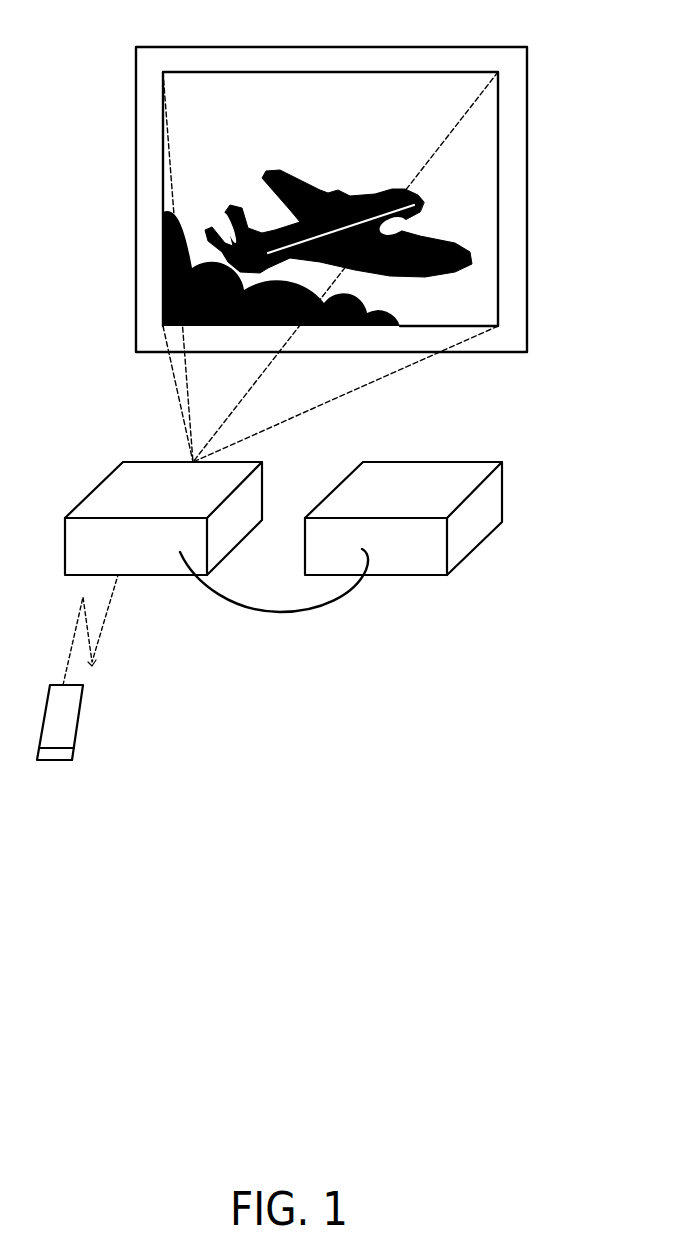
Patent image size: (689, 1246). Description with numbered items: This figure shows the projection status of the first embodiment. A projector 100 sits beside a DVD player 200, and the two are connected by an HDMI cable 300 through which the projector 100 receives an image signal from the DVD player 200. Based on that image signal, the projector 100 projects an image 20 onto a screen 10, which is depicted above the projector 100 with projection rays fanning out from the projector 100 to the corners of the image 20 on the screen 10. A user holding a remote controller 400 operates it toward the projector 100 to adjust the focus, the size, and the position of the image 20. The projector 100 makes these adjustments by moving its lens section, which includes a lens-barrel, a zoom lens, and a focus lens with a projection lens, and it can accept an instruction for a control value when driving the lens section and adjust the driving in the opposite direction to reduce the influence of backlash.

The screen 10 is at (480, 47).
The image 20 is at (412, 72).
The projector 100 is at (268, 505).
The DVD player 200 is at (495, 507).
The HDMI cable 300 is at (337, 597).
The remote controller 400 is at (88, 698).